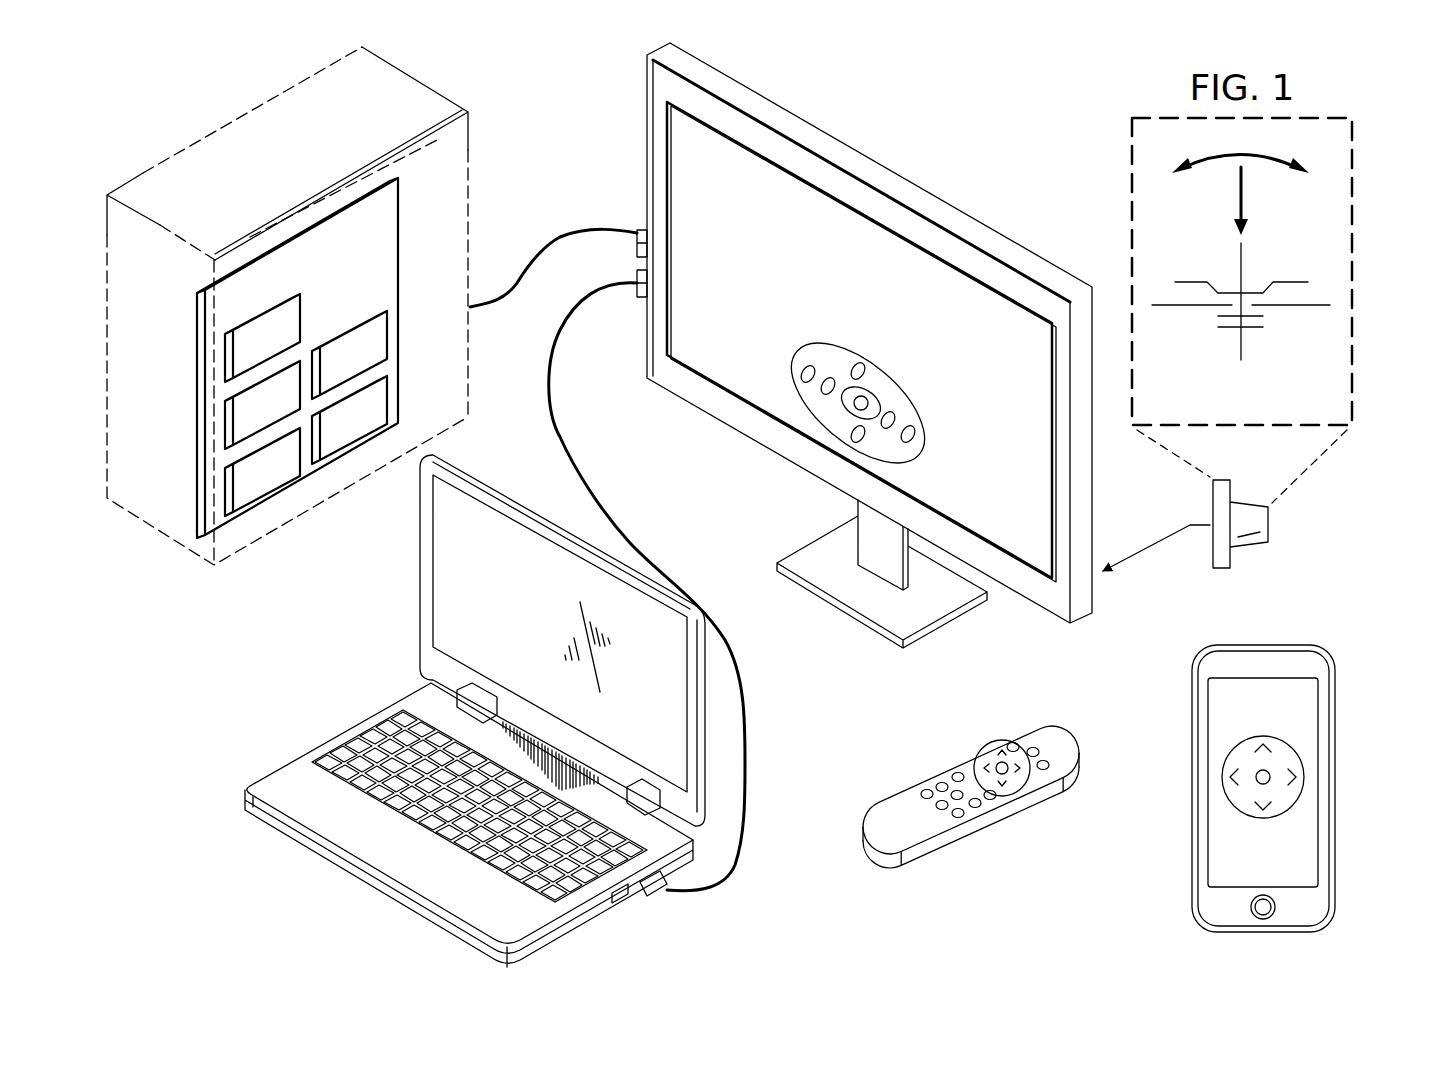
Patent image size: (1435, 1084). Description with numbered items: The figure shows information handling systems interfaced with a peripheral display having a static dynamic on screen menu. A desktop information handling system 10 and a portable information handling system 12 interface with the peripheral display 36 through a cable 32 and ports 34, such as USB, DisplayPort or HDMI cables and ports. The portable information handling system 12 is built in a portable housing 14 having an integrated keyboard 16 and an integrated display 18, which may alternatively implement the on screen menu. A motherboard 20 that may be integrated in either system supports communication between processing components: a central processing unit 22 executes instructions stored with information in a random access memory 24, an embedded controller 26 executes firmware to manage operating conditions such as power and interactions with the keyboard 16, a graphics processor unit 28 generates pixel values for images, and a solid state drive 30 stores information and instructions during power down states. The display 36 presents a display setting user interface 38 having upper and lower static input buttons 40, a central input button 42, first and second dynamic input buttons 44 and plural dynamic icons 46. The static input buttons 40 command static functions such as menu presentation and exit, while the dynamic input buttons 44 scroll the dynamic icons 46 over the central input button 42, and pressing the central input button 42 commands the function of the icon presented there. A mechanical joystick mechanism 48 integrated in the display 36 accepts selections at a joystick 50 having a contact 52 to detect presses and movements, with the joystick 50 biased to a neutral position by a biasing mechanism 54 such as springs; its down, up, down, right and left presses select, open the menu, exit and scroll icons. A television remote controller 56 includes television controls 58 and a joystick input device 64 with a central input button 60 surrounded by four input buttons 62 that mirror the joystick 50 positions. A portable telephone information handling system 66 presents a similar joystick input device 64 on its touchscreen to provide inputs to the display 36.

The desktop information handling system 10 is at (287, 390).
The portable information handling system 12 is at (425, 711).
The portable housing 14 is at (238, 800).
The keyboard 16 is at (427, 815).
The display 18 is at (490, 630).
The motherboard 20 is at (297, 358).
The central processing unit 22 is at (238, 352).
The random access memory 24 is at (238, 428).
The embedded controller 26 is at (238, 490).
The graphics processor unit 28 is at (380, 340).
The solid state drive 30 is at (380, 405).
The cable 32 is at (548, 403).
The port 34 is at (617, 318).
The peripheral display 36 is at (948, 283).
The display setting user interface 38 is at (811, 376).
The static input button 40 is at (855, 364).
The central input button 42 is at (872, 397).
The dynamic input button 44 is at (915, 432).
The dynamic icons 46 is at (824, 386).
The joystick mechanism 48 is at (1240, 361).
The joystick 50 is at (1240, 265).
The contact 52 is at (1228, 330).
The biasing mechanism 54 is at (1290, 306).
The television remote controller 56 is at (926, 826).
The television controls 58 is at (928, 775).
The central input button 60 is at (1127, 711).
The input button 62 is at (1020, 777).
The joystick input device 64 is at (1127, 794).
The portable telephone information handling system 66 is at (1176, 866).